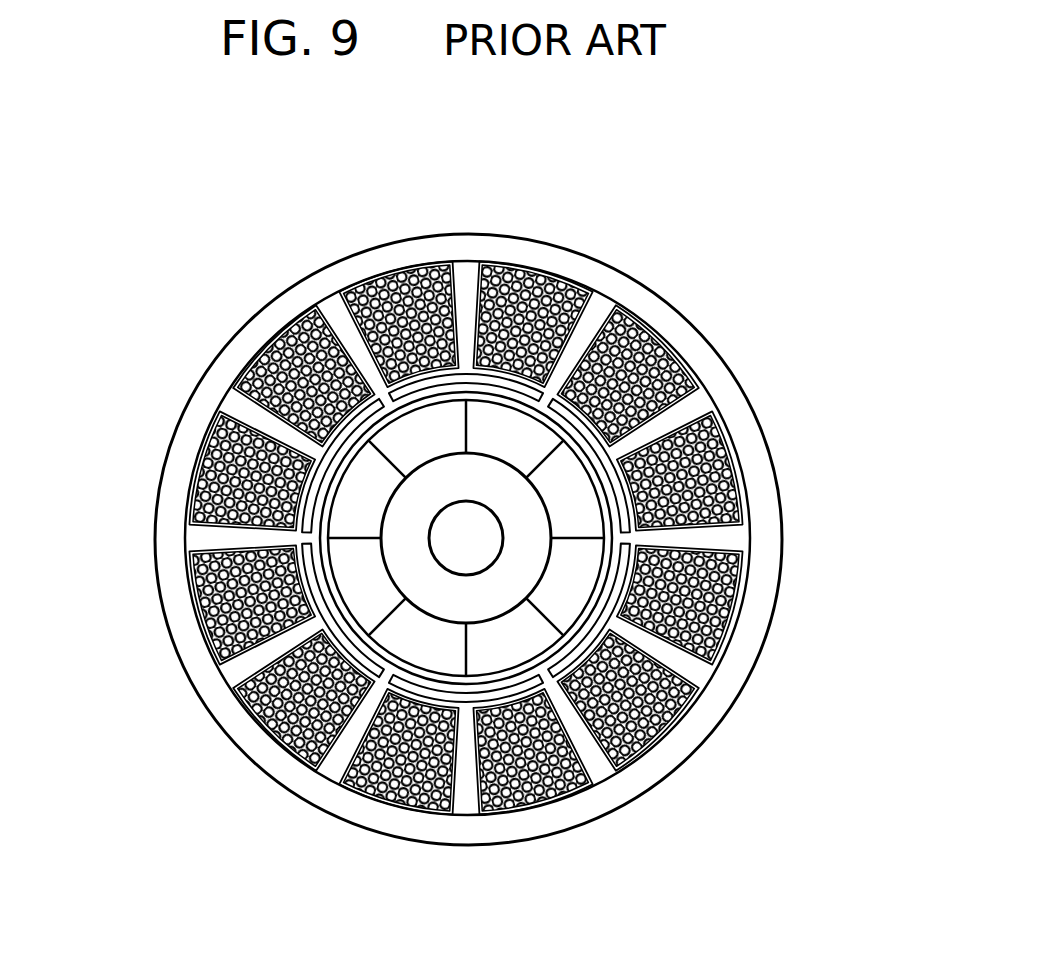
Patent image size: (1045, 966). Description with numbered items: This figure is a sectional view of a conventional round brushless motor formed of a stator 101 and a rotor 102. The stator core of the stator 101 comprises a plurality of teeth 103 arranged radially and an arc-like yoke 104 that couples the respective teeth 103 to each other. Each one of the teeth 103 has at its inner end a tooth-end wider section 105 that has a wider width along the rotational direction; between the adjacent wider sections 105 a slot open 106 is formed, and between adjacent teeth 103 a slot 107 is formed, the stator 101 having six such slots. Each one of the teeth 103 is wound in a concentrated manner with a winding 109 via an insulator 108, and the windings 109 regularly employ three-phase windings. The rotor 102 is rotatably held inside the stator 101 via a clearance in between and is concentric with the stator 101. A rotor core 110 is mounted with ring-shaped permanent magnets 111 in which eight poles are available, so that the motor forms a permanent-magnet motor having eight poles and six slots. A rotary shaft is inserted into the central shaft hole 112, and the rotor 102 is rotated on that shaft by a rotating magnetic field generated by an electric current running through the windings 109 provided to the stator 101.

The stator 101 is at (190, 377).
The rotor 102 is at (632, 536).
The teeth 103 is at (697, 405).
The arc-like yoke 104 is at (622, 290).
The tooth-end wider section 105 is at (453, 325).
The slot open 106 is at (386, 398).
The slot 107 is at (207, 538).
The insulator 108 is at (248, 705).
The winding 109 is at (332, 755).
The rotor core 110 is at (493, 603).
The permanent magnets 111 is at (567, 613).
The shaft hole 112 is at (485, 540).